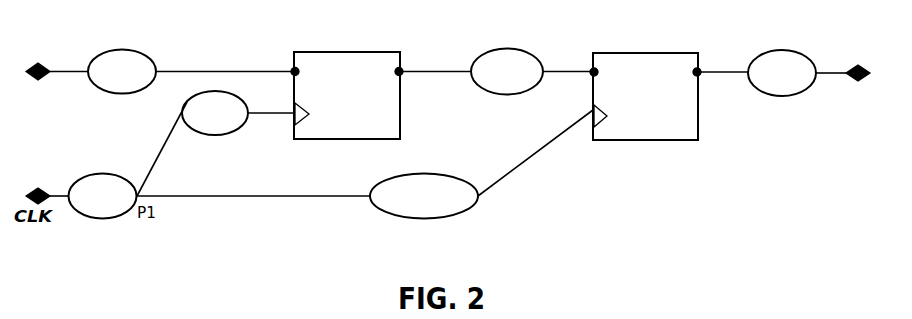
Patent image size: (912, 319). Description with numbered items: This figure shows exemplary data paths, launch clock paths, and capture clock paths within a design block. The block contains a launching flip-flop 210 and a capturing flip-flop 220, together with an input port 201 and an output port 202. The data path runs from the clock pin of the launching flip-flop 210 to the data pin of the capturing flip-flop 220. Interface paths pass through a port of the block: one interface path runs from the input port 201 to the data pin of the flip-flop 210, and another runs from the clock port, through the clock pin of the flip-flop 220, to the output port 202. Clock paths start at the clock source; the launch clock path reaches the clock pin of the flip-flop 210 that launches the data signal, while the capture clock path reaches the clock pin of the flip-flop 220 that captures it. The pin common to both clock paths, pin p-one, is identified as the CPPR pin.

The input port 201 is at (62, 60).
The output port 202 is at (864, 60).
The launching flip-flop 210 is at (347, 107).
The capturing flip-flop 220 is at (645, 109).